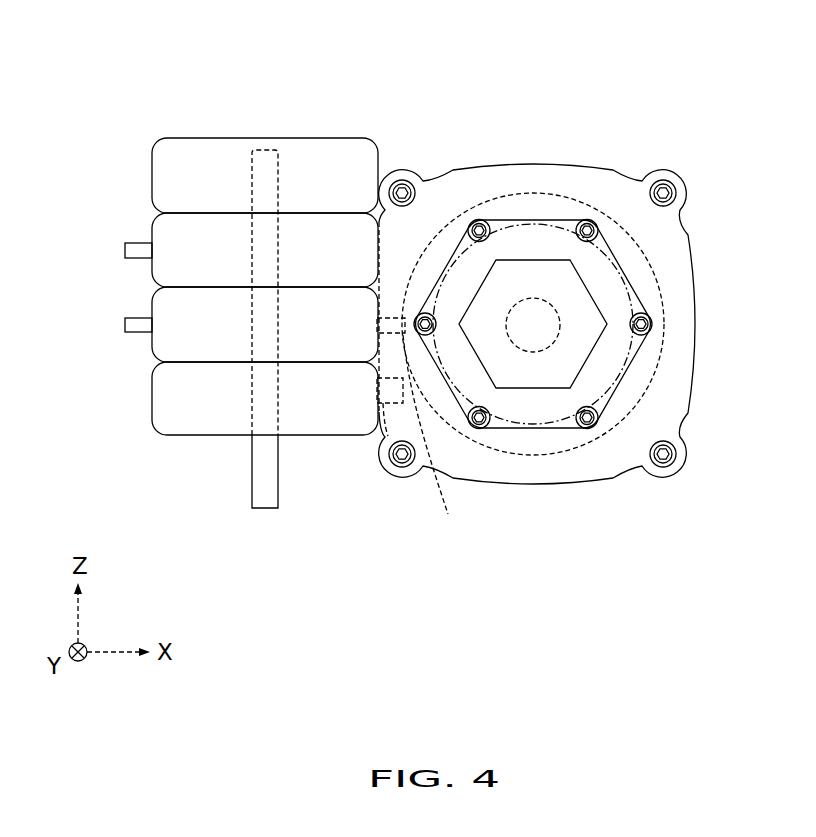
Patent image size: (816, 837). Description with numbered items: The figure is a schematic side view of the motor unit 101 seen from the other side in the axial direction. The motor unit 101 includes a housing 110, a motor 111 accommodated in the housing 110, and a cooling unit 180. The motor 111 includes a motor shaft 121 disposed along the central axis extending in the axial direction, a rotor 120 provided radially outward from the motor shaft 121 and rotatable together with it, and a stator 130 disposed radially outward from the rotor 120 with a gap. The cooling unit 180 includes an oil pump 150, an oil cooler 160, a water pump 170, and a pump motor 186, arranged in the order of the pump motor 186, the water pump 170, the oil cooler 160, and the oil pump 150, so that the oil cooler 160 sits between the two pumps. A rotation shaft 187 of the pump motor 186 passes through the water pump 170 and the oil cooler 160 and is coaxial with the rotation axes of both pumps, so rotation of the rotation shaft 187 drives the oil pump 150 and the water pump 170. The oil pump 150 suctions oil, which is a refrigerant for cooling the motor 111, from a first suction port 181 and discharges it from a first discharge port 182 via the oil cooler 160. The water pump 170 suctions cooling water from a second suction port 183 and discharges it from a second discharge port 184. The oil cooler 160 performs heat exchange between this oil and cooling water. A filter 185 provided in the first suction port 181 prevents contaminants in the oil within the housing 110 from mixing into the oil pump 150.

The motor unit 101 is at (537, 281).
The housing 110 is at (537, 327).
The motor 111 is at (524, 467).
The rotor 120 is at (553, 420).
The motor shaft 121 is at (527, 290).
The stator 130 is at (472, 205).
The oil pump 150 is at (224, 424).
The oil cooler 160 is at (191, 342).
The water pump 170 is at (196, 240).
The cooling unit 180 is at (237, 303).
The first suction port 181 is at (422, 430).
The first discharge port 182 is at (383, 385).
The second suction port 183 is at (132, 245).
The second discharge port 184 is at (133, 329).
The filter 185 is at (402, 480).
The pump motor 186 is at (223, 155).
The rotation shaft 187 is at (278, 468).